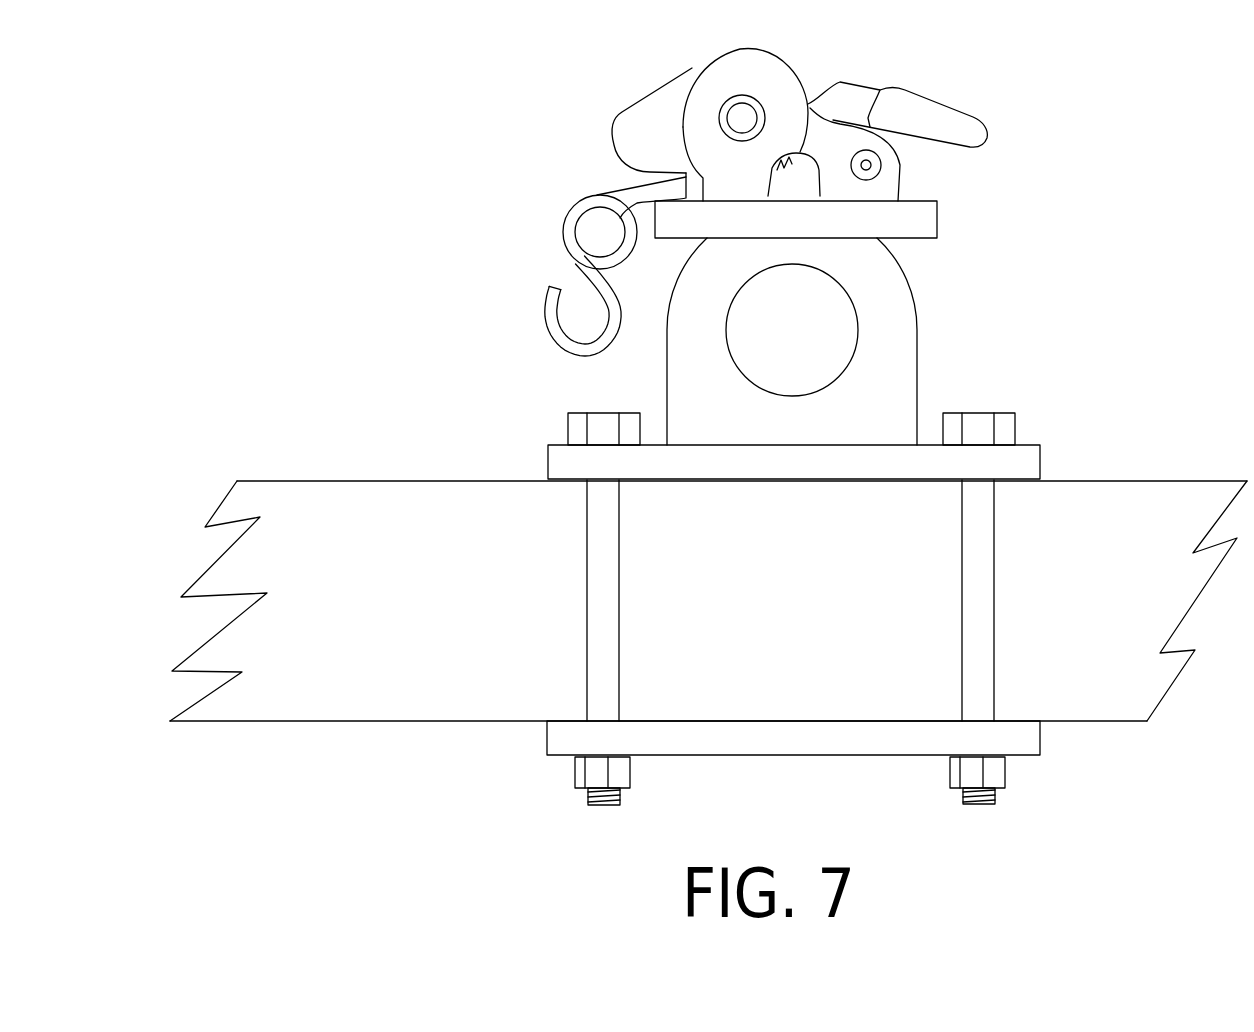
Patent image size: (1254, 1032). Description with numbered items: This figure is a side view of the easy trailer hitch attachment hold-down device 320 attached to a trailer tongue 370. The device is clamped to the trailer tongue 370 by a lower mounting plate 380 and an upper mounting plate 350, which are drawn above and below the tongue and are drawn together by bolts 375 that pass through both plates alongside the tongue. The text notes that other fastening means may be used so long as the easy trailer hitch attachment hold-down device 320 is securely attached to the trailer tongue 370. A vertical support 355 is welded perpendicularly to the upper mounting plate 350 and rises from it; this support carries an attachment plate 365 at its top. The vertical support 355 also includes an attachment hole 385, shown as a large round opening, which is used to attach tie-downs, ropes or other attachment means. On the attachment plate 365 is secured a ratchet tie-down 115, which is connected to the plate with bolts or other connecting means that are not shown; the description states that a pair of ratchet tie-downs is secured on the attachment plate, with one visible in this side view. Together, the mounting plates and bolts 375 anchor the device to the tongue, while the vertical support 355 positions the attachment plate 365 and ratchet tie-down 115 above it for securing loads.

The easy trailer hitch attachment hold-down device 320 is at (280, 165).
The ratchet tie-down 115 is at (645, 118).
The attachment plate 365 is at (912, 218).
The vertical support 355 is at (688, 383).
The attachment hole 385 is at (828, 305).
The upper mounting plate 350 is at (1022, 462).
The trailer tongue 370 is at (323, 495).
The bolts 375 is at (597, 613).
The lower mounting plate 380 is at (557, 743).